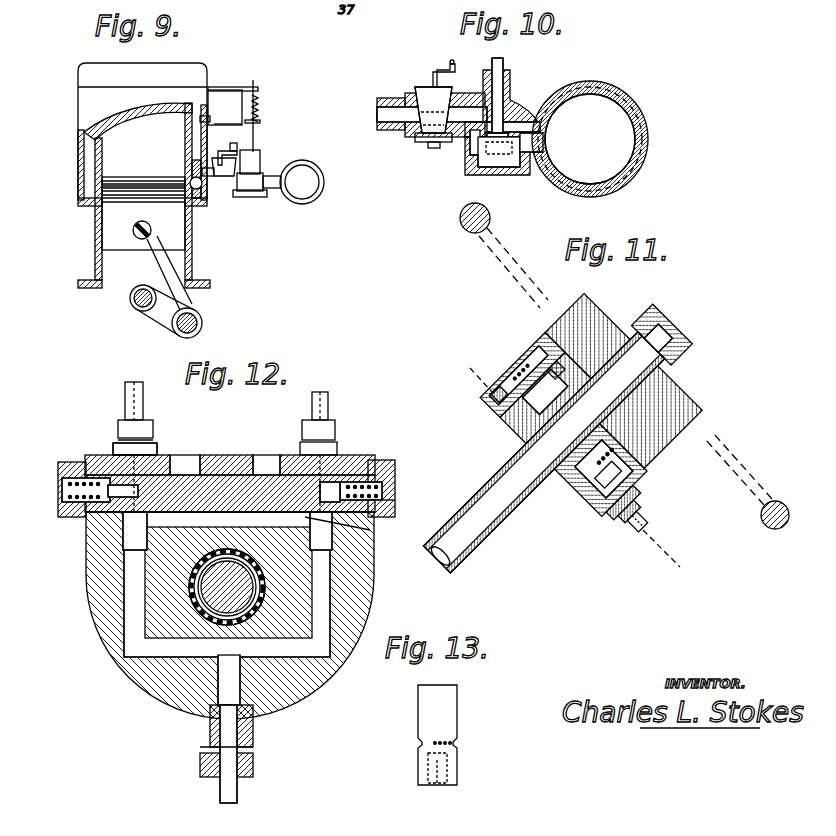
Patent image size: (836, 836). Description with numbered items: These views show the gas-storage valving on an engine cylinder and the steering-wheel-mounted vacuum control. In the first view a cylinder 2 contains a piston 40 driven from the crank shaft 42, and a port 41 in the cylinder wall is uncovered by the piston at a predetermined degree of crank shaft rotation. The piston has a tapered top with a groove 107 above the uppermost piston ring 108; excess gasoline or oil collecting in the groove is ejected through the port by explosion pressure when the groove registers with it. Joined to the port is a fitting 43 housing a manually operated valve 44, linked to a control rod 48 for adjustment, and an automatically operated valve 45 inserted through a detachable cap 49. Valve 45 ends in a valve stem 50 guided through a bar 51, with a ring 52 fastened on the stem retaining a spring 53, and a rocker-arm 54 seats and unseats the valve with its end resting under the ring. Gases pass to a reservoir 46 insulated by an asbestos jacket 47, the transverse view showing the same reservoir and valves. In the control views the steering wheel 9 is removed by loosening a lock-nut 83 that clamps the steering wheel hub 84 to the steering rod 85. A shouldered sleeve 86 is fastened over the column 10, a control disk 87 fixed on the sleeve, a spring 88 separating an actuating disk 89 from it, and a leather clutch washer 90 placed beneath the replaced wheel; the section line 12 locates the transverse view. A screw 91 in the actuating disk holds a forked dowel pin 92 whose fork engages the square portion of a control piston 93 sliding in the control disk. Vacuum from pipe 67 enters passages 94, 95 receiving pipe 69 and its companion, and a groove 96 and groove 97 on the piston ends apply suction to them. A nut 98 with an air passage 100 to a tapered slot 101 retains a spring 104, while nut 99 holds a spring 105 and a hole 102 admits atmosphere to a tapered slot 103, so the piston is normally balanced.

In FIG. 9, the cylinder 2 is at (192, 236).
In FIG. 9, the piston 40 is at (110, 230).
In FIG. 9, the groove 107 is at (105, 183).
In FIG. 9, the uppermost piston ring 108 is at (96, 200).
In FIG. 9, the crank shaft 42 is at (130, 298).
In FIG. 9, the port 41 is at (205, 195).
In FIG. 9, the bar 51 is at (214, 92).
In FIG. 9, the rocker-arm 54 is at (220, 124).
In FIG. 9, the spring 53 is at (260, 96).
In FIG. 9, the ring 52 is at (258, 121).
In FIG. 9, the control rod 48 is at (237, 146).
In FIG. 10, the control rod 48 is at (450, 60).
In FIG. 9, the manually operated valve 44 is at (220, 157).
In FIG. 10, the manually operated valve 44 is at (425, 94).
In FIG. 9, the valve stem 50 is at (256, 150).
In FIG. 10, the valve stem 50 is at (500, 62).
In FIG. 9, the fitting 43 is at (262, 160).
In FIG. 10, the fitting 43 is at (514, 88).
In FIG. 9, the reservoir 46 is at (318, 178).
In FIG. 10, the reservoir 46 is at (625, 142).
In FIG. 10, the asbestos jacket 47 is at (616, 92).
In FIG. 10, the automatically operated valve 45 is at (440, 150).
In FIG. 10, the detachable cap 49 is at (465, 168).
In FIG. 11, the steering wheel 9 is at (462, 226).
In FIG. 11, the section line 12 is at (555, 476).
In FIG. 11, the tube 10 is at (512, 522).
In FIG. 12, the tube 10 is at (143, 386).
In FIG. 11, the steering rod 85 is at (452, 562).
In FIG. 12, the steering rod 85 is at (210, 596).
In FIG. 11, the steering wheel hub 84 is at (672, 388).
In FIG. 11, the lock-nut 83 is at (660, 332).
In FIG. 11, the forked dowel pin 92 is at (500, 388).
In FIG. 12, the forked dowel pin 92 is at (215, 460).
In FIG. 11, the screw 91 is at (552, 368).
In FIG. 11, the shouldered sleeve 86 is at (592, 505).
In FIG. 12, the shouldered sleeve 86 is at (200, 560).
In FIG. 11, the leather clutch washer 90 is at (612, 455).
In FIG. 11, the actuating disk 89 is at (614, 474).
In FIG. 11, the spring 88 is at (632, 500).
In FIG. 11, the control disk 87 is at (638, 511).
In FIG. 12, the control disk 87 is at (360, 578).
In FIG. 11, the pipe 67 is at (648, 524).
In FIG. 12, the pipe 67 is at (237, 788).
In FIG. 12, the passage 95 is at (138, 626).
In FIG. 12, the passage 94 is at (320, 610).
In FIG. 12, the control piston 93 is at (258, 475).
In FIG. 13, the control piston 93 is at (449, 708).
In FIG. 12, the groove 97 is at (145, 510).
In FIG. 12, the nut 99 is at (58, 464).
In FIG. 12, the hole 102 is at (62, 490).
In FIG. 12, the spring 105 is at (62, 502).
In FIG. 12, the nut 98 is at (380, 460).
In FIG. 12, the air passage 100 is at (382, 486).
In FIG. 12, the spring 104 is at (382, 500).
In FIG. 12, the tapered slot 101 is at (335, 470).
In FIG. 13, the tapered slot 101 is at (440, 785).
In FIG. 12, the tapered slot 103 is at (118, 443).
In FIG. 12, the groove 96 is at (351, 526).
In FIG. 13, the groove 96 is at (455, 744).
In FIG. 12, the pipe 69 is at (328, 392).